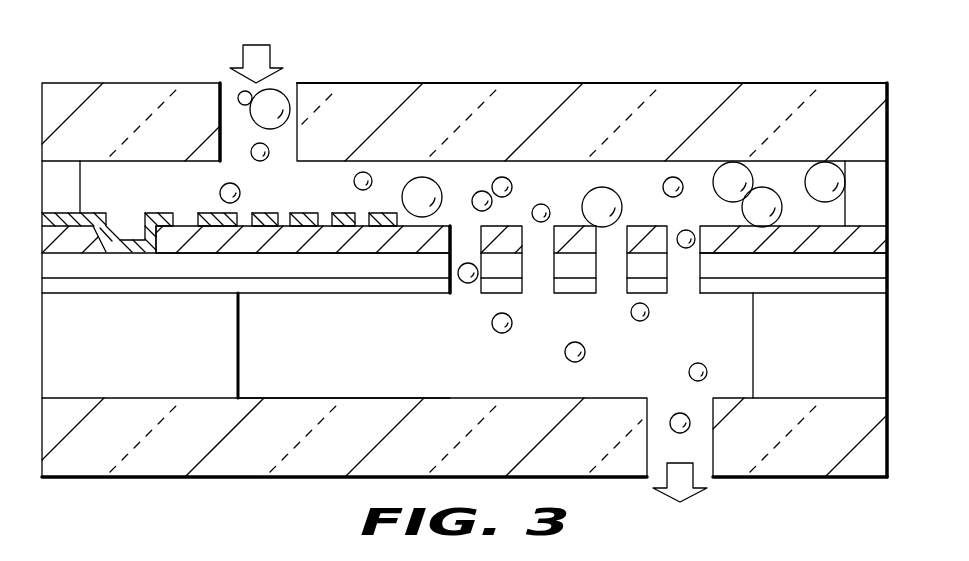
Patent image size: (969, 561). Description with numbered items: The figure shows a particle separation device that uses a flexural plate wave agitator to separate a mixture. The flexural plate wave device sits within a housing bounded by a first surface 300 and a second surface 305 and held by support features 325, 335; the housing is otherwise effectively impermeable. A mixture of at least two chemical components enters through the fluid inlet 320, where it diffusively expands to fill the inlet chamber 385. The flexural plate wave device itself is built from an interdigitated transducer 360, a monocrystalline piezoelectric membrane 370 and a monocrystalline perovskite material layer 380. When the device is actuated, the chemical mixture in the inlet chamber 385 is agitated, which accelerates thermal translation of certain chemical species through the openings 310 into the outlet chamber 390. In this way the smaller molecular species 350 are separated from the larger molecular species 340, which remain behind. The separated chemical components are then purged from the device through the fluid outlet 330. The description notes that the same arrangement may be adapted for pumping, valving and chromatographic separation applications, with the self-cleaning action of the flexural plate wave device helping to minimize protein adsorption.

The first surface 300 is at (227, 477).
The second surface 305 is at (783, 83).
The openings 310 is at (537, 292).
The fluid inlet 320 is at (243, 52).
The support feature 325 is at (80, 187).
The fluid outlet 330 is at (695, 496).
The support feature 335 is at (158, 358).
The larger molecular species 340 is at (811, 166).
The smaller molecular species 350 is at (689, 372).
The interdigitated transducer 360 is at (110, 253).
The monocrystalline piezoelectric membrane 370 is at (423, 250).
The monocrystalline perovskite material layer 380 is at (283, 272).
The inlet chamber 385 is at (183, 201).
The outlet chamber 390 is at (369, 362).